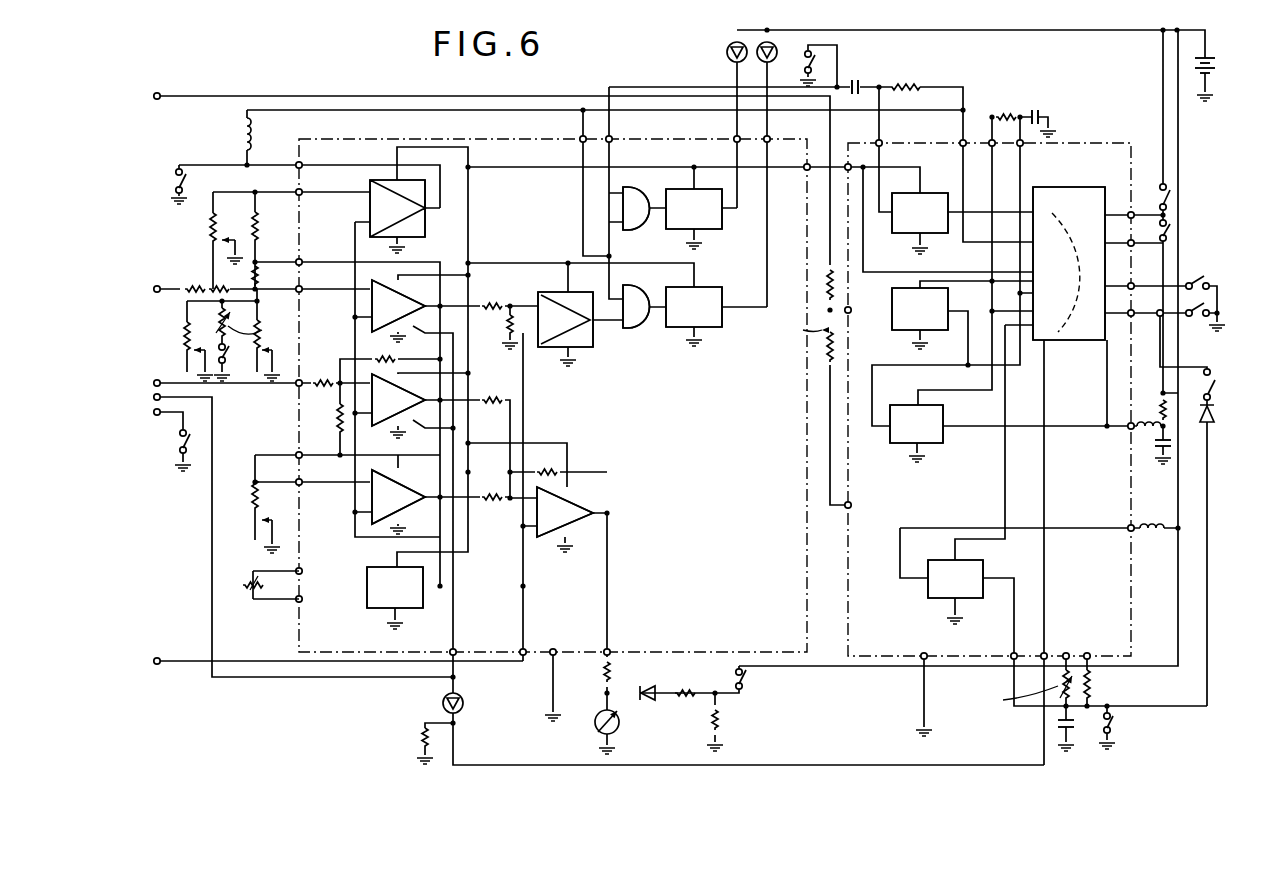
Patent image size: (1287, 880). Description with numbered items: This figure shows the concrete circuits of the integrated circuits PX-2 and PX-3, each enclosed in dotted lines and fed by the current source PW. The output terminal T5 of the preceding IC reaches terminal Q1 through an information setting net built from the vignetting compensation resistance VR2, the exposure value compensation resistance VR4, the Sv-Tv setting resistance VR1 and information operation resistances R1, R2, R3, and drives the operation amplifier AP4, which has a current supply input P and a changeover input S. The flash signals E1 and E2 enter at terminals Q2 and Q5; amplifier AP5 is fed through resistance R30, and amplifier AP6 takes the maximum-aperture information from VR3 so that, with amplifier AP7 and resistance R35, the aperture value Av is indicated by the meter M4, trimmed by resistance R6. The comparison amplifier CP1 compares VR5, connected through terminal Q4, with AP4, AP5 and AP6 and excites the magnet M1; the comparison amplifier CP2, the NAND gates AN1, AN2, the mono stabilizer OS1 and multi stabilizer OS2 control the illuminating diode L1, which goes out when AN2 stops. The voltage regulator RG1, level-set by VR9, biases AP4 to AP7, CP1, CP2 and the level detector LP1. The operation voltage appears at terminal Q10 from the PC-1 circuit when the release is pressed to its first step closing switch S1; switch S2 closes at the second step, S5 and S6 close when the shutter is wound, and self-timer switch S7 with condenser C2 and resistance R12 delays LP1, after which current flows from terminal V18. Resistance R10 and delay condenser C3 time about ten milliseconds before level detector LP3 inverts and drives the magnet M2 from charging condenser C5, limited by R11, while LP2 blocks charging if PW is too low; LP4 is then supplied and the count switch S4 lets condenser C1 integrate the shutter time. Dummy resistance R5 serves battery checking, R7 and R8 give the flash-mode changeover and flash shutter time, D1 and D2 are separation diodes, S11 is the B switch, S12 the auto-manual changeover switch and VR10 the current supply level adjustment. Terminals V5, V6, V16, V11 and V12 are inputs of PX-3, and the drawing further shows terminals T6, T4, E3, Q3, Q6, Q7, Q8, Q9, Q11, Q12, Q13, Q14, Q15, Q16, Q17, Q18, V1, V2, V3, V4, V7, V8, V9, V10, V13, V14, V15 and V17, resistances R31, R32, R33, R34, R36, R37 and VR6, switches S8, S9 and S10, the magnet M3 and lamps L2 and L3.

The terminal T6 is at (168, 86).
The output terminal of IC PX-1 T5 is at (161, 280).
The terminal T4 is at (148, 662).
The charge completion signal E1 is at (146, 398).
The appointed aperture signal E2 is at (146, 384).
The terminal E3 is at (146, 415).
The magnet M1 is at (237, 134).
The first holding magnet M2 is at (1147, 437).
The coil M3 is at (1153, 518).
The meter M4 is at (618, 724).
The switch S1 is at (1197, 276).
The switch S2 is at (1183, 321).
The count switch S4 is at (1117, 723).
The switch S5 is at (1156, 230).
The switch S6 is at (1156, 197).
The self timer switch S7 is at (818, 64).
The switch S8 is at (749, 677).
The switch S9 is at (175, 441).
The switch S10 is at (236, 353).
The switch for B S11 is at (1199, 384).
The auto-manual change over switch S12 is at (193, 182).
The terminal Q1 is at (309, 282).
The terminal Q2 is at (532, 644).
The terminal Q3 is at (309, 255).
The terminal Q4 is at (309, 185).
The terminal Q5 is at (308, 394).
The terminal Q6 is at (309, 448).
The terminal Q7 is at (309, 475).
The terminal Q8 is at (309, 158).
The terminal Q9 is at (573, 132).
The terminal Q10 is at (799, 178).
The terminal Q11 is at (467, 644).
The terminal Q12 is at (623, 132).
The terminal Q13 is at (781, 132).
The terminal Q14 is at (726, 132).
The terminal Q15 is at (565, 644).
The terminal Q16 is at (621, 644).
The terminal Q17 is at (313, 564).
The terminal Q18 is at (313, 592).
The information operation resistance R1 is at (208, 280).
The information operation resistance R2 is at (266, 277).
The information operation resistance R3 is at (266, 227).
The dummy resistance R5 is at (707, 710).
The meter adjusting resistance R6 is at (617, 673).
The mode change over resistance R7 is at (414, 739).
The flash shutter time resistance R8 is at (1097, 687).
The delay resistance R10 is at (1007, 108).
The integrating time limiting resistance R11 is at (1148, 409).
The self timer resistance R12 is at (904, 77).
The resistance R30 is at (323, 376).
The resistor R31 is at (326, 417).
The resistor R32 is at (387, 352).
The resistor R33 is at (492, 298).
The resistor R34 is at (495, 325).
The resistance R35 is at (495, 392).
The resistor R36 is at (493, 490).
The resistor R37 is at (550, 463).
The shutter time ASA sensitivity setting resistance VR1 is at (274, 340).
The vignetting compensation resistance VR2 is at (179, 340).
The information input resistance VR3 is at (238, 505).
The exposure value compensation resistance VR4 is at (255, 323).
The variable resistance VR5 is at (203, 231).
The variable resistor VR6 is at (1025, 689).
The level adjusting resistance VR9 is at (271, 585).
The level adjusting resistance VR10 is at (798, 316).
The integrating condenser C1 is at (1075, 726).
The self timer condenser C2 is at (858, 79).
The delay condenser C3 is at (1038, 109).
The charging condenser C5 is at (1157, 454).
The separation diode D1 is at (646, 686).
The separation diode D2 is at (1218, 418).
The illuminating diode L1 is at (776, 52).
The lamp L2 is at (462, 703).
The lamp L3 is at (728, 52).
The comparison amplifier circuit CP1 is at (397, 208).
The comparison amplifying circuit CP2 is at (565, 319).
The operation amplifier AP4 is at (398, 307).
The operation amplifier AP5 is at (398, 407).
The operation amplifier AP6 is at (398, 494).
The operation amplifier AP7 is at (565, 510).
The NAND gate AN1 is at (622, 208).
The NAND gate AN2 is at (635, 330).
The mono stabilizer OS1 is at (694, 209).
The multi stabilizer OS2 is at (694, 307).
The voltage regulating circuit RG1 is at (395, 587).
The level detector circuit LP1 is at (920, 213).
The level detector circuit LP2 is at (920, 309).
The level detector circuit LP3 is at (916, 424).
The level detector circuit LP4 is at (955, 579).
The PC-1 circuit PC-1 is at (1072, 263).
The integrated circuit PX-2 is at (679, 642).
The integrated circuit PX-3 is at (869, 642).
The current source PW is at (1216, 67).
The terminal V1 is at (988, 136).
The terminal V2 is at (1030, 152).
The terminal V3 is at (922, 646).
The terminal V4 is at (1006, 646).
The input terminal V5 is at (1059, 646).
The input terminal V6 is at (1081, 646).
The terminal V7 is at (1119, 521).
The terminal V8 is at (1114, 437).
The terminal V9 is at (1124, 306).
The terminal V10 is at (1128, 279).
The input terminal V11 is at (1124, 237).
The input terminal V12 is at (1122, 208).
The terminal V13 is at (953, 136).
The terminal V14 is at (862, 499).
The terminal V15 is at (892, 136).
The input terminal V16 is at (1035, 646).
The terminal V17 is at (862, 318).
The terminal V18 is at (862, 160).